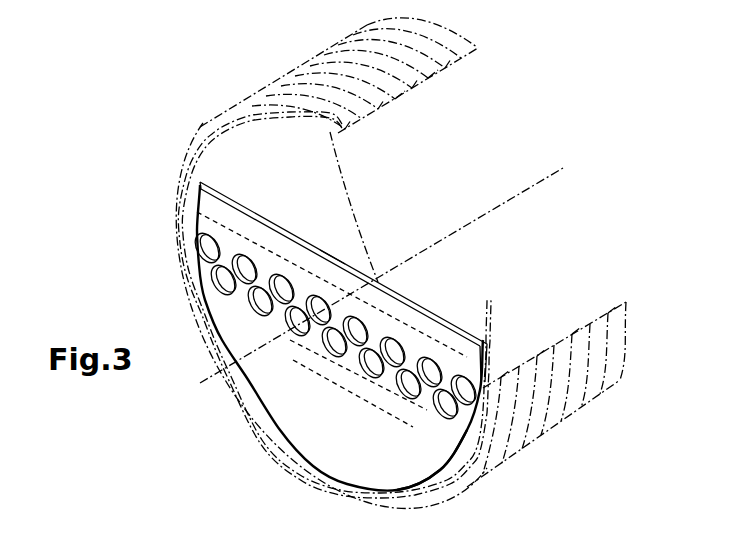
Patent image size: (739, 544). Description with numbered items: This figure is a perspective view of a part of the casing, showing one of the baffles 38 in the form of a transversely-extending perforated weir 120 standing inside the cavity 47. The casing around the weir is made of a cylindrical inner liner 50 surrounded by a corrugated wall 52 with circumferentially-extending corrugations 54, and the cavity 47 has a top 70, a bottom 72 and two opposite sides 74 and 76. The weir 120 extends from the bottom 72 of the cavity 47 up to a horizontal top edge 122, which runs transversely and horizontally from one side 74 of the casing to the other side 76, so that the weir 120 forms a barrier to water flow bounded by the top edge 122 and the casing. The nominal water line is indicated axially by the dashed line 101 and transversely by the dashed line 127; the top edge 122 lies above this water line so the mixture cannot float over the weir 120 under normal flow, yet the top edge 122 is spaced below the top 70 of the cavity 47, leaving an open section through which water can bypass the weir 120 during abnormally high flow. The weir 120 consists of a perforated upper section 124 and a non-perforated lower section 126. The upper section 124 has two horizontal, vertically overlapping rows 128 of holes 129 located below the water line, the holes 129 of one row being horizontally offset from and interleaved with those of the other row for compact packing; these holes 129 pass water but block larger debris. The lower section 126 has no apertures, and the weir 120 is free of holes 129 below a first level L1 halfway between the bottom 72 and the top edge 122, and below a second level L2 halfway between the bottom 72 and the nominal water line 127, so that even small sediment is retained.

The baffle 38 is at (293, 405).
The cavity 47 is at (477, 194).
The inner liner 50 is at (420, 84).
The corrugated wall 52 is at (465, 28).
The corrugations 54 is at (360, 26).
The top of the cavity 70 is at (383, 113).
The bottom of the cavity 72 is at (338, 467).
The side of the cavity 74 is at (320, 195).
The side of the cavity 76 is at (585, 322).
The nominal water line 101 is at (535, 178).
The perforated weir 120 is at (317, 430).
The top edge of the weir 122 is at (433, 313).
The perforated upper section 124 is at (487, 370).
The non-perforated lower section 126 is at (425, 447).
The nominal water line 127 is at (330, 267).
The rows of holes 128 is at (212, 273).
The holes 129 is at (252, 310).
The first level L1 is at (362, 380).
The second level L2 is at (375, 403).